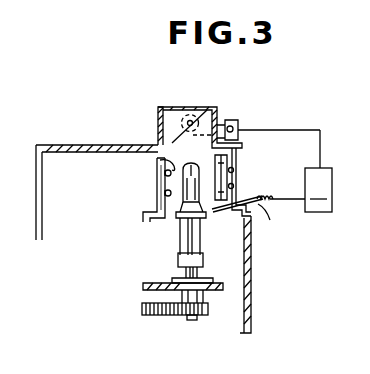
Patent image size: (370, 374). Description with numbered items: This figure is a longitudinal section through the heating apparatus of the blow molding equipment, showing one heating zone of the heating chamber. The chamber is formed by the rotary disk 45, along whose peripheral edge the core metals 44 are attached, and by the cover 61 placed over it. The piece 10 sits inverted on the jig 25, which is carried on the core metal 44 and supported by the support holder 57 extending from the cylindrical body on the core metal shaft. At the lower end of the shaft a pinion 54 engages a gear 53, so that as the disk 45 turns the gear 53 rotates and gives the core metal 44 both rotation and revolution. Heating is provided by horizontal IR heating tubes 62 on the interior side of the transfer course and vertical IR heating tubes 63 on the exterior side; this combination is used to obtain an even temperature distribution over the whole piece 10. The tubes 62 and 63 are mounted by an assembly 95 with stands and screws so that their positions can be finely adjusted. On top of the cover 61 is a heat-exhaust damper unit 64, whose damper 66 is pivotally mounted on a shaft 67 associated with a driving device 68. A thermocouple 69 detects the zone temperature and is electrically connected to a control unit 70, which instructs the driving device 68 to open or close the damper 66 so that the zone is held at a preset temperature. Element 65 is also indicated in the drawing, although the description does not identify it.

The cover 61 is at (77, 145).
The housing side wall 65 is at (158, 117).
The heat-exhaust damper unit 64 is at (226, 94).
The shaft 67 is at (189, 120).
The damper 66 is at (199, 117).
The driving device 68 is at (238, 128).
The control unit 70 is at (301, 171).
The IR heating tubes 62 is at (155, 158).
The assembly 95 is at (158, 187).
The IR heating tubes 63 is at (234, 162).
The thermocouple 69 is at (251, 214).
The piece 10 is at (191, 177).
The jig 25 is at (196, 237).
The support holder 57 is at (178, 260).
The core metal 44 is at (203, 262).
The rotary disk 45 is at (150, 285).
The gear 53 is at (162, 316).
The pinion 54 is at (203, 318).